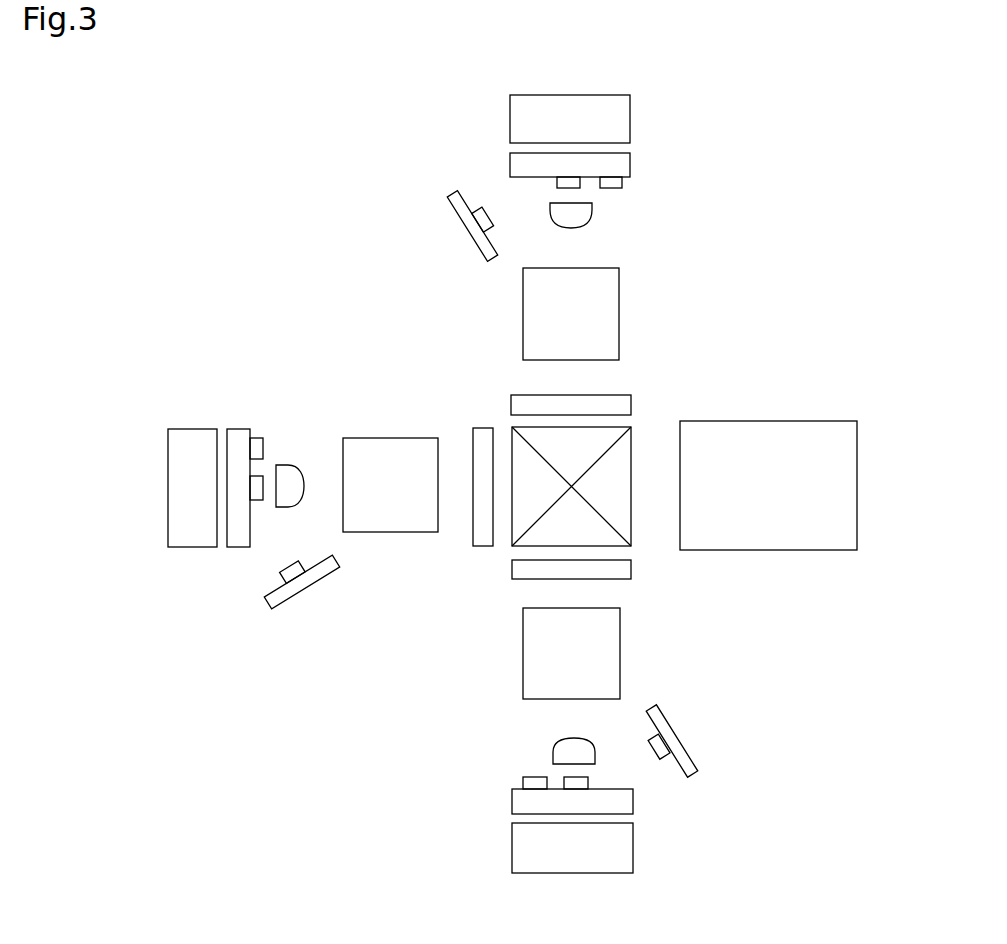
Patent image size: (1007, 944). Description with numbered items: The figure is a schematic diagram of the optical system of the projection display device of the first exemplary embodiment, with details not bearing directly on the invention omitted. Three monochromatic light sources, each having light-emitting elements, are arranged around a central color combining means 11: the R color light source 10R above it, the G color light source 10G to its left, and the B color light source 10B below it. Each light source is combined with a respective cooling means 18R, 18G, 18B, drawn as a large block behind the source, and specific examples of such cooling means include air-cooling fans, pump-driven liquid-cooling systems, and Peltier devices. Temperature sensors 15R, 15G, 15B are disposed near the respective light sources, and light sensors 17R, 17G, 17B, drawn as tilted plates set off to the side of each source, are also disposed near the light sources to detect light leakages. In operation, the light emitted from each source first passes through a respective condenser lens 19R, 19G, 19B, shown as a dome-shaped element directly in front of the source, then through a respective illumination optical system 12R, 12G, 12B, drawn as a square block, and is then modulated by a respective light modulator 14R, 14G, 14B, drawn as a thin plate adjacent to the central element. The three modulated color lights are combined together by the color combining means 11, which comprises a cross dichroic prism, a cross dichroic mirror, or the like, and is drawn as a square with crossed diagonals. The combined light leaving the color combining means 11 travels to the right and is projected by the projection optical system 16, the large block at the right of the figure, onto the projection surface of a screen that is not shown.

The color combining means 11 is at (631, 445).
The projection optical system 16 is at (730, 550).
The illumination optical system 12R is at (619, 310).
The illumination optical system 12G is at (383, 532).
The illumination optical system 12B is at (620, 655).
The light modulator 14R is at (632, 395).
The light modulator 14G is at (480, 546).
The light modulator 14B is at (631, 565).
The R color light source 10R is at (580, 184).
The G color light source 10G is at (263, 477).
The B color light source 10B is at (567, 778).
The temperature sensor 15R is at (623, 186).
The temperature sensor 15G is at (262, 438).
The temperature sensor 15B is at (522, 778).
The light sensor 17R is at (483, 206).
The light sensor 17G is at (280, 572).
The light sensor 17B is at (655, 753).
The cooling means 18R is at (630, 113).
The cooling means 18G is at (188, 429).
The cooling means 18B is at (512, 847).
The condenser lens 19R is at (587, 228).
The condenser lens 19G is at (292, 463).
The condenser lens 19B is at (562, 743).